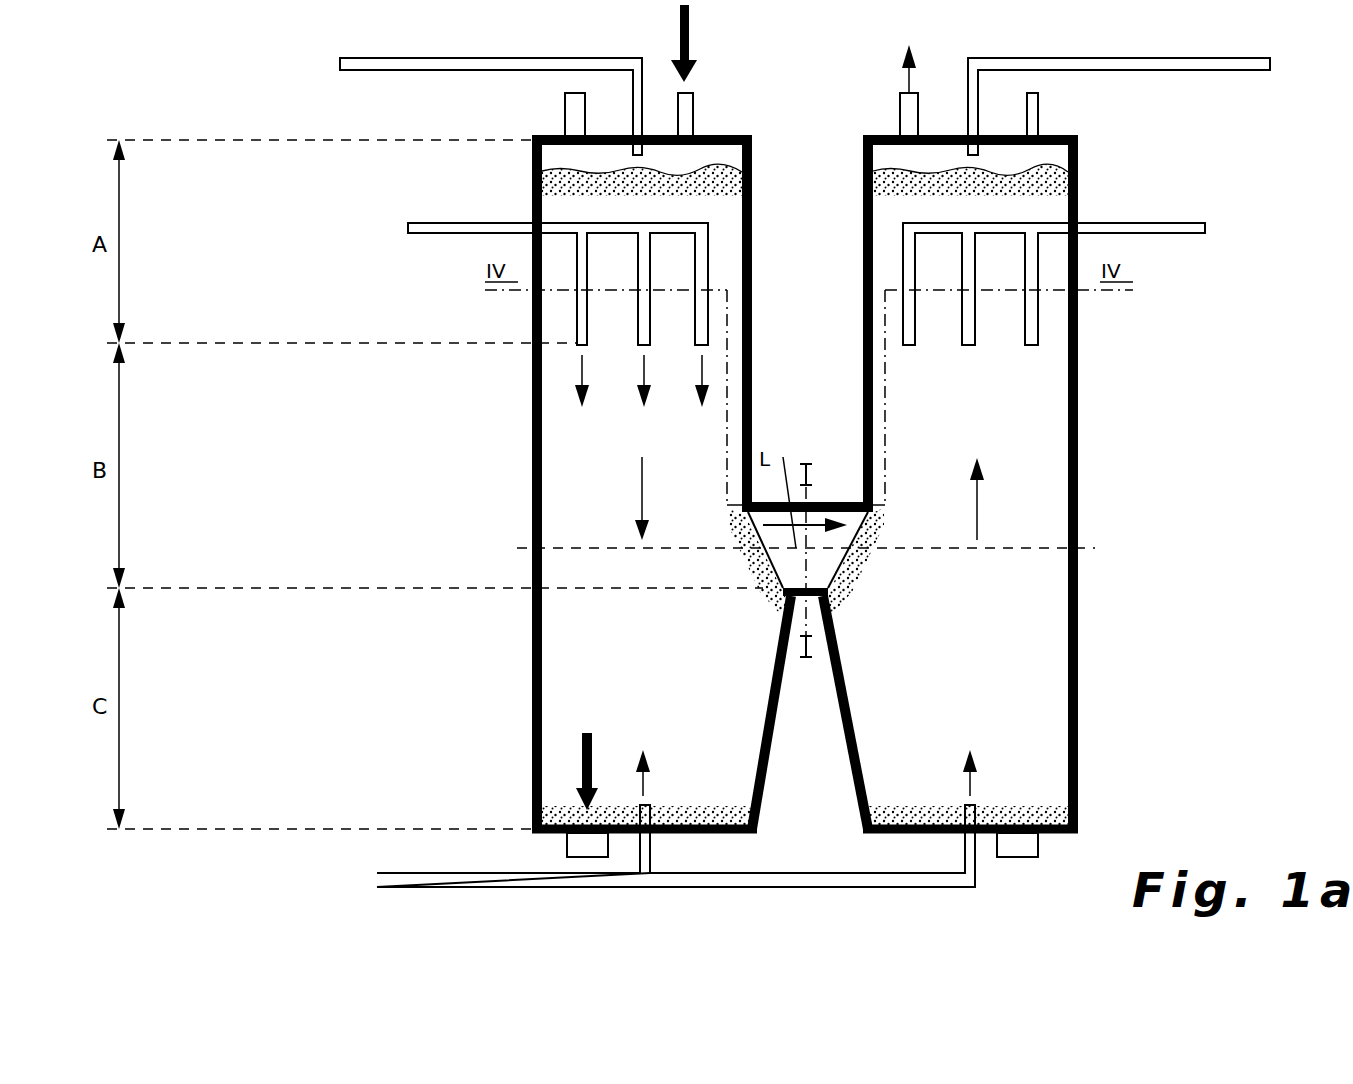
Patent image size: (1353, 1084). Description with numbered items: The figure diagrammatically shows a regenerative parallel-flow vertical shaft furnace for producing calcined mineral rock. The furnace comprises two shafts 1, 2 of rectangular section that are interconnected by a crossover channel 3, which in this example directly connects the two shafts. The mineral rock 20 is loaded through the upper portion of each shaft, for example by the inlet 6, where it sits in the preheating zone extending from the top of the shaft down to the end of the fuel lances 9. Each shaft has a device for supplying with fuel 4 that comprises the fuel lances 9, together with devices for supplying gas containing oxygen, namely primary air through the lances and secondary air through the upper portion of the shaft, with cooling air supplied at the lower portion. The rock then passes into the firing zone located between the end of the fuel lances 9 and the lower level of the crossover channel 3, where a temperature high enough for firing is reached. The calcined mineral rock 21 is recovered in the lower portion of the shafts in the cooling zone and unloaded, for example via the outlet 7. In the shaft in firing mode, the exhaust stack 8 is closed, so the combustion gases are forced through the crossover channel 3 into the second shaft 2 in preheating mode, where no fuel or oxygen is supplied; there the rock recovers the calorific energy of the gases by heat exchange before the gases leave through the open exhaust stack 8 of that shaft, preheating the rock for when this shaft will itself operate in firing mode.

The shaft 1 is at (490, 145).
The shaft 2 is at (1106, 152).
The crossover channel 3 is at (830, 502).
The device for supplying with fuel 4 is at (408, 228).
The inlet 6 is at (695, 115).
The outlet 7 is at (567, 845).
The exhaust stack 8 is at (587, 118).
The fuel lances 9 is at (577, 325).
The mineral rock 20 is at (585, 180).
The calcined mineral rock 21 is at (565, 815).